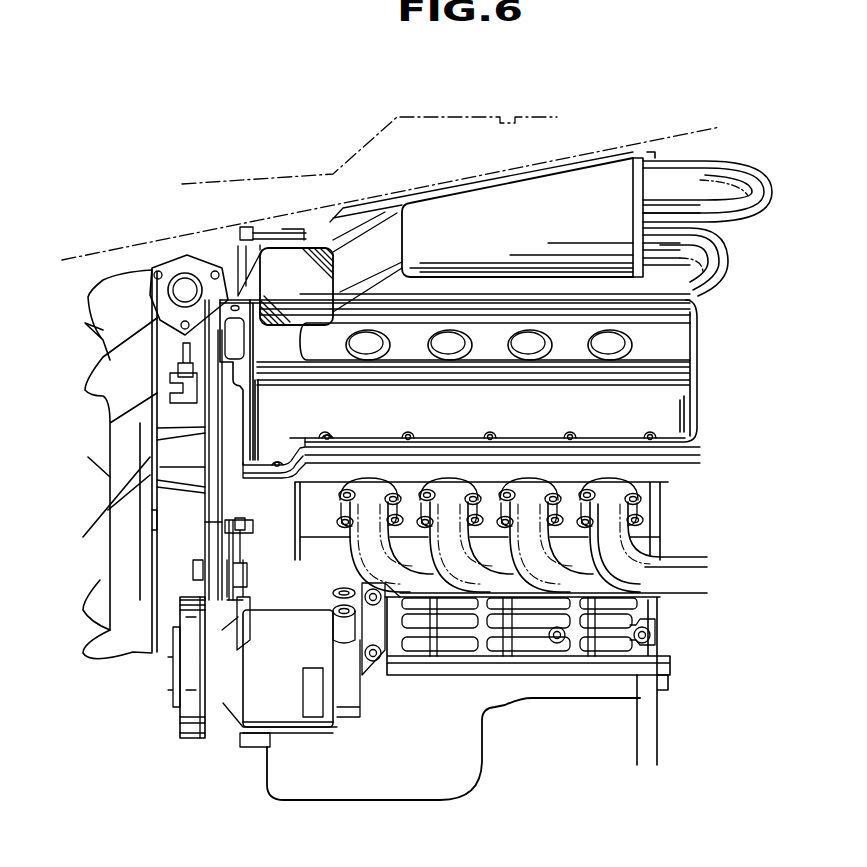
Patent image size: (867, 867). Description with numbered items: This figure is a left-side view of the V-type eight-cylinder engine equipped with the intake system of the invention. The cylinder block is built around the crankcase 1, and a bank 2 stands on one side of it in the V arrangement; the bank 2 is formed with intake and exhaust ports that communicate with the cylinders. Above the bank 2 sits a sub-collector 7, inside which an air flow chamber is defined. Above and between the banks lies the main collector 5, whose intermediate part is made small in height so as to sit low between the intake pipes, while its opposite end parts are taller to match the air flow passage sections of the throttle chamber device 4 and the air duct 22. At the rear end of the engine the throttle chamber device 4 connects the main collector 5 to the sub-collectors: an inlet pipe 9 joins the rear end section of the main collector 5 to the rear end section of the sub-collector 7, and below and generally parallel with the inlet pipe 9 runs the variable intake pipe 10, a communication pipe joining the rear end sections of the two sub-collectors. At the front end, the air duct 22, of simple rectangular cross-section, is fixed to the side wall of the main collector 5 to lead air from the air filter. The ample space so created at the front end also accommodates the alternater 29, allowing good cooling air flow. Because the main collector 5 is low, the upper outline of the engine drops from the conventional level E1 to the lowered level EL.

The crankcase 1 is at (652, 519).
The bank 2 is at (686, 337).
The throttle chamber device 4 is at (640, 165).
The main collector 5 is at (388, 210).
The sub-collector 7 is at (543, 198).
The inlet pipe 9 is at (773, 199).
The variable intake pipe 10 is at (732, 267).
The air duct 22 is at (326, 238).
The alternater 29 is at (266, 233).
The conventional level E1 is at (561, 117).
The lowered level EL is at (693, 126).